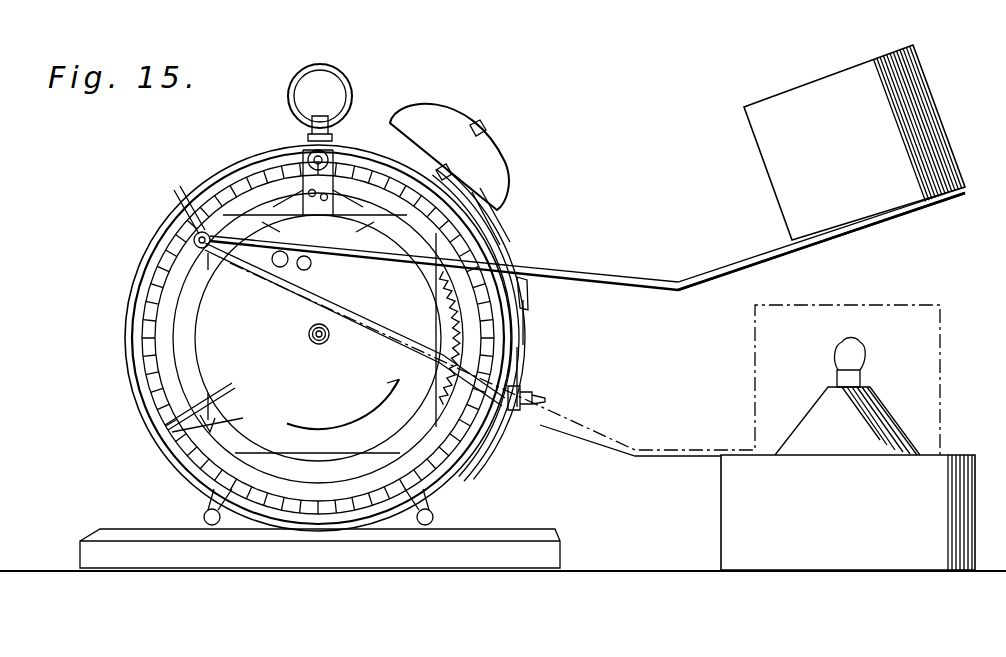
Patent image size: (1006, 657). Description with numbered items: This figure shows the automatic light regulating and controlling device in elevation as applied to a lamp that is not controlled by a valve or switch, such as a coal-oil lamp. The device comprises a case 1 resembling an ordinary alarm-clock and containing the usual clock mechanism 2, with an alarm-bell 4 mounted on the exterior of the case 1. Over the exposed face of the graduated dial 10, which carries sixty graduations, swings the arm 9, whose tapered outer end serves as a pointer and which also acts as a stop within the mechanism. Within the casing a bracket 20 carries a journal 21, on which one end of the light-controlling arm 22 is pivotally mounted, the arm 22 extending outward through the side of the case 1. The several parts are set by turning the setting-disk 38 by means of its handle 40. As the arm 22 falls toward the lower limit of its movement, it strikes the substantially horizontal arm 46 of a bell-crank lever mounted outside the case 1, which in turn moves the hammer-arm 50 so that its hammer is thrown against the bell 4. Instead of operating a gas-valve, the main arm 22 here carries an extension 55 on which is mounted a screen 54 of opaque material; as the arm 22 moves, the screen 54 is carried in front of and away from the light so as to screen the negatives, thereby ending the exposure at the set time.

The case 1 is at (160, 320).
The clock mechanism 2 is at (447, 448).
The alarm-bell 4 is at (437, 115).
The arm 9 is at (170, 432).
The dial 10 is at (178, 355).
The bracket 20 is at (192, 240).
The journal 21 is at (174, 196).
The light-controlling arm 22 is at (592, 285).
The setting-disk 38 is at (200, 456).
The handle 40 is at (278, 268).
The arm 46 is at (535, 410).
The hammer-arm 50 is at (525, 278).
The screen 54 is at (798, 98).
The extension 55 is at (703, 278).